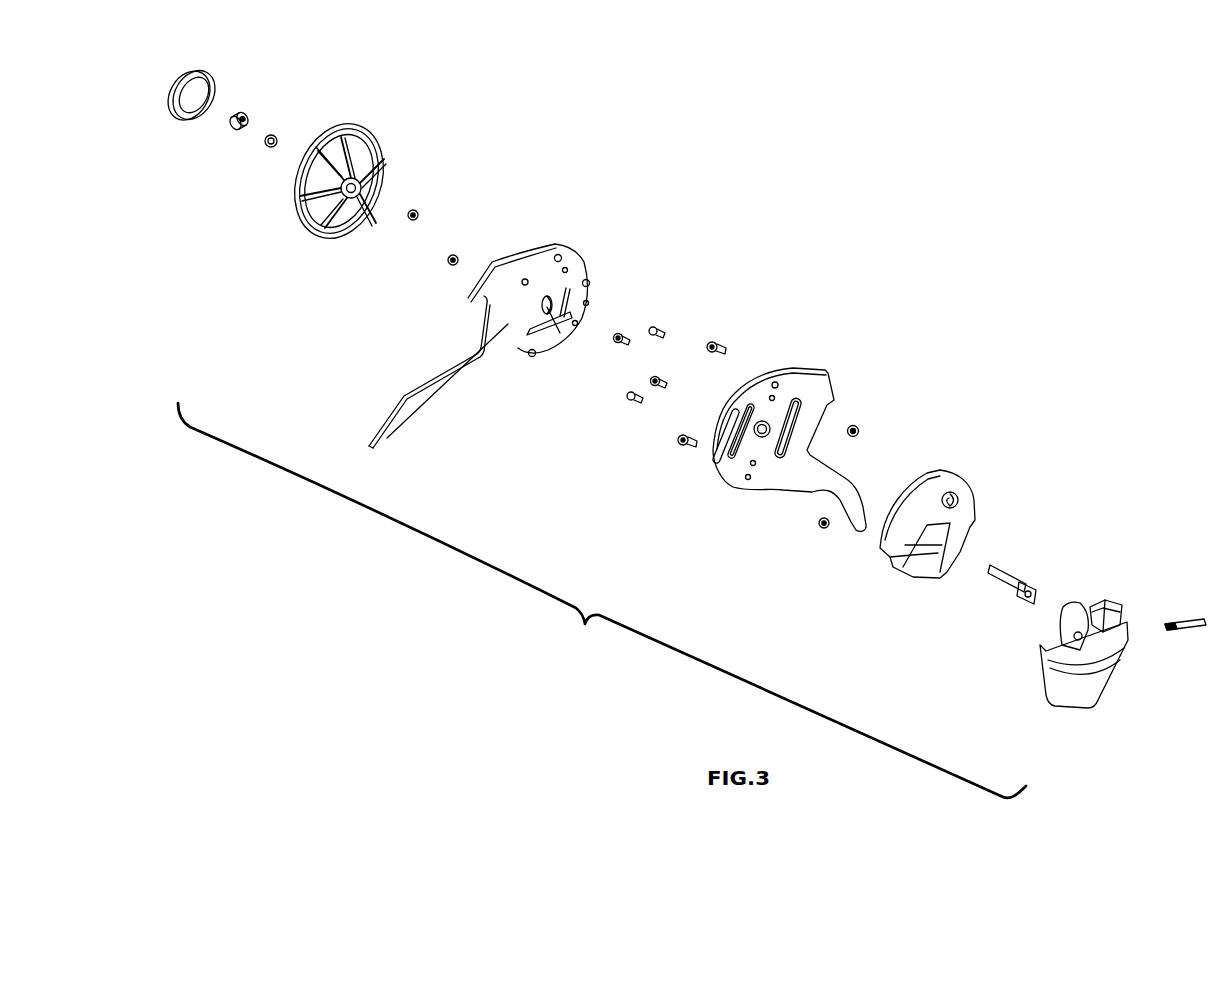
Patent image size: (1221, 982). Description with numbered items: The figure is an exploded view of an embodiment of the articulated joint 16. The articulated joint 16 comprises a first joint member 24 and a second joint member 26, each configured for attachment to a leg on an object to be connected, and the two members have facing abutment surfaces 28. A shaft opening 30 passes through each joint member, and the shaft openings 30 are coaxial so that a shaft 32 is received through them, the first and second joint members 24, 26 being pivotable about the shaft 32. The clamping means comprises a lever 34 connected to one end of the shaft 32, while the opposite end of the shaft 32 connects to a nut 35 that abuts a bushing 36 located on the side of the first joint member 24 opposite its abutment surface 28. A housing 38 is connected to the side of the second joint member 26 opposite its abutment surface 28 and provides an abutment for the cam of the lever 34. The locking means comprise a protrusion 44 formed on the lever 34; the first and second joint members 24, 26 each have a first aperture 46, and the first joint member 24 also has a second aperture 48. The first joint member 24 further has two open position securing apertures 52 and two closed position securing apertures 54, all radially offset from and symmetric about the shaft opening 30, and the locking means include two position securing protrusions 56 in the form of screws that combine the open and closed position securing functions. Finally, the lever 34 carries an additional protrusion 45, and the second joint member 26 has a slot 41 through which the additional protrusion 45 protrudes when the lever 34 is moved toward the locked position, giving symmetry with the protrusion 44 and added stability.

The articulated joint 16 is at (868, 212).
The first joint member 24 is at (508, 267).
The second joint member 26 is at (835, 392).
The abutment surface 28 is at (565, 270).
The shaft opening 30 is at (540, 302).
The shaft 32 is at (1007, 578).
The lever 34 is at (1080, 683).
The nut 35 is at (239, 132).
The bushing 36 is at (323, 234).
The housing 38 is at (900, 538).
The slot 41 is at (757, 463).
The protrusion 44 is at (1114, 604).
The additional protrusion 45 is at (1073, 607).
The first aperture 46 is at (588, 303).
The second aperture 48 is at (537, 330).
The open position securing apertures 52 is at (558, 258).
The closed position securing apertures 54 is at (587, 283).
The position securing protrusions 56 is at (716, 340).